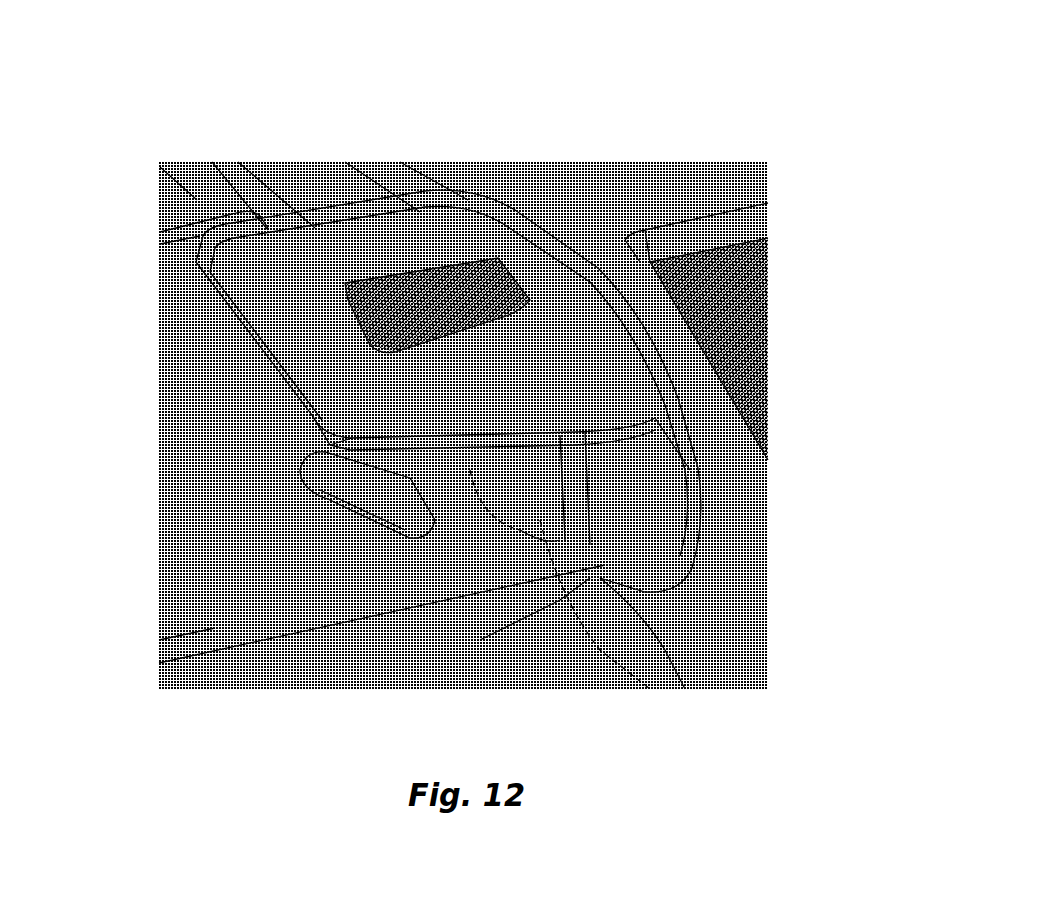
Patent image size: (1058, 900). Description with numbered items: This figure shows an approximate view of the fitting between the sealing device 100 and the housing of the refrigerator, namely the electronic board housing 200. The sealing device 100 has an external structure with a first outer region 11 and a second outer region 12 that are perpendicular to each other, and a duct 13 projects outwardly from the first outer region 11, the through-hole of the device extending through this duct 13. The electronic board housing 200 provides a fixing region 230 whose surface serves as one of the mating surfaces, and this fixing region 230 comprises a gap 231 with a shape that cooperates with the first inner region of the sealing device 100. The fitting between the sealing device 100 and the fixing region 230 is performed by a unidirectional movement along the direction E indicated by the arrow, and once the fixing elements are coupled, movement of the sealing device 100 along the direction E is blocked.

The sealing device 100 is at (658, 197).
The second outer region 12 is at (407, 235).
The duct 13 is at (707, 365).
The first outer region 11 is at (693, 523).
The electronic board housing 200 is at (190, 610).
The fixing region 230 is at (293, 487).
The gap 231 is at (583, 553).
The direction E is at (543, 107).